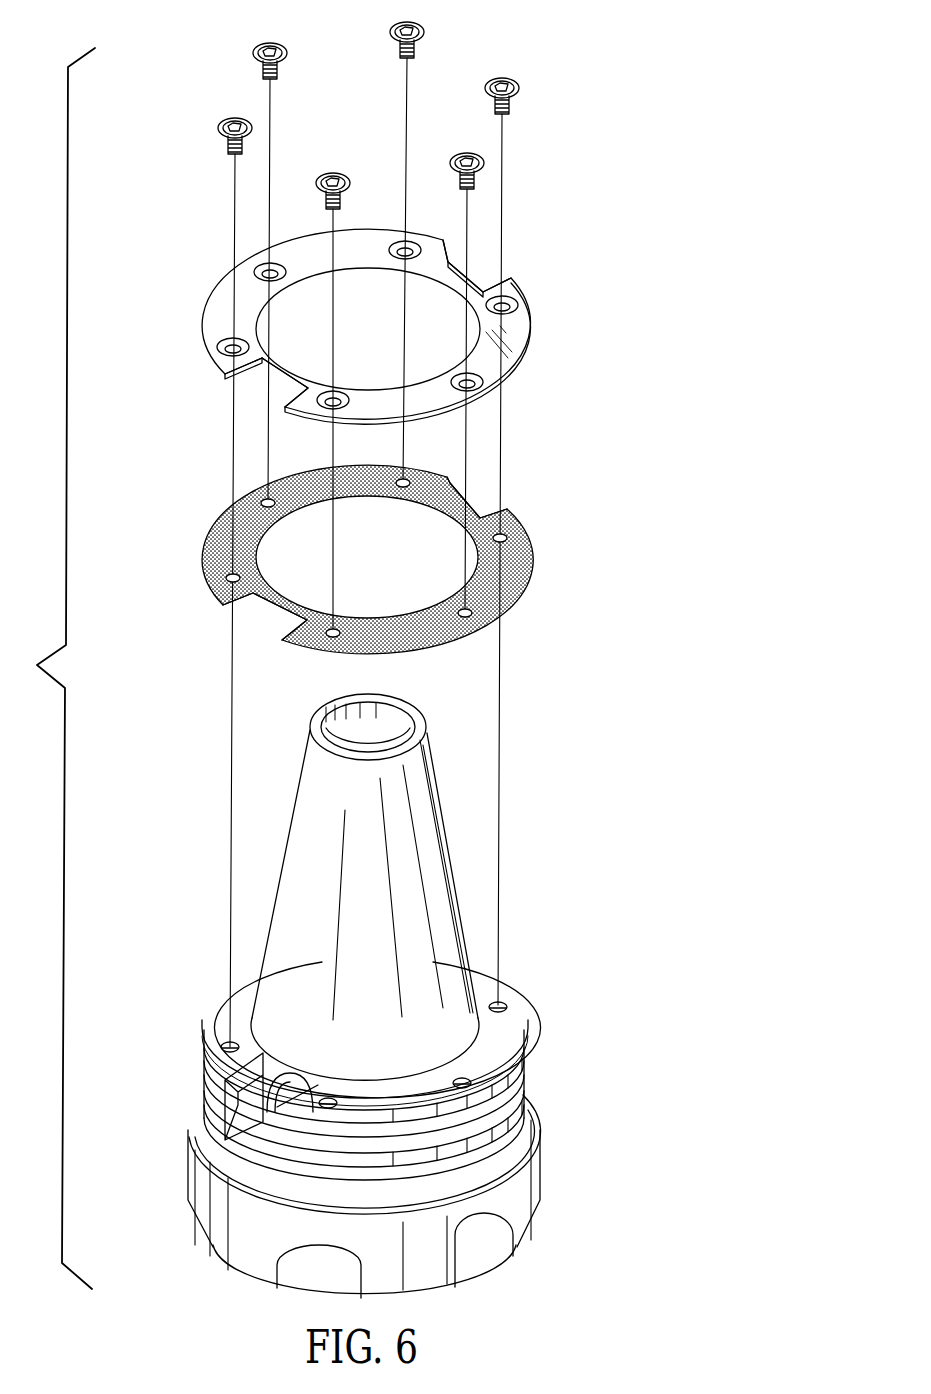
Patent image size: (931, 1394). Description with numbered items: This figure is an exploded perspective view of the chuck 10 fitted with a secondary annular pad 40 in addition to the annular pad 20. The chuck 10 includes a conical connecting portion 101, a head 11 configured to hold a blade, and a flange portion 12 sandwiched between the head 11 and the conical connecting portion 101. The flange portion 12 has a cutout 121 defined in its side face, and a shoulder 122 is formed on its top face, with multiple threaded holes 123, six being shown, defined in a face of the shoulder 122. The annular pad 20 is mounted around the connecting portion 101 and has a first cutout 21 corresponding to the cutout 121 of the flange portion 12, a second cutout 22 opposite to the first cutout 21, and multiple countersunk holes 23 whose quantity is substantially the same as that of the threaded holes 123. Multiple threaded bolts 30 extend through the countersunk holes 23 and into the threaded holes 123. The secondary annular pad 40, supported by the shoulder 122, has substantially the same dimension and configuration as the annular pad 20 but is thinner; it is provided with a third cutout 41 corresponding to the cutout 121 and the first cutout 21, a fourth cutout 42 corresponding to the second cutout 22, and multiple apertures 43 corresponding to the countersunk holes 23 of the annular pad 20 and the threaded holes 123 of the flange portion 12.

The chuck 10 is at (518, 708).
The conical connecting portion 101 is at (417, 793).
The head 11 is at (553, 1178).
The flange portion 12 is at (374, 1064).
The cutout 121 is at (243, 1082).
The shoulder 122 is at (502, 1046).
The threaded holes 123 is at (500, 1004).
The annular pad 20 is at (392, 326).
The first cutout 21 is at (243, 378).
The second cutout 22 is at (452, 256).
The countersunk holes 23 is at (473, 383).
The threaded bolts 30 is at (512, 82).
The secondary annular pad 40 is at (385, 559).
The third cutout 41 is at (252, 600).
The fourth cutout 42 is at (444, 492).
The apertures 43 is at (472, 611).